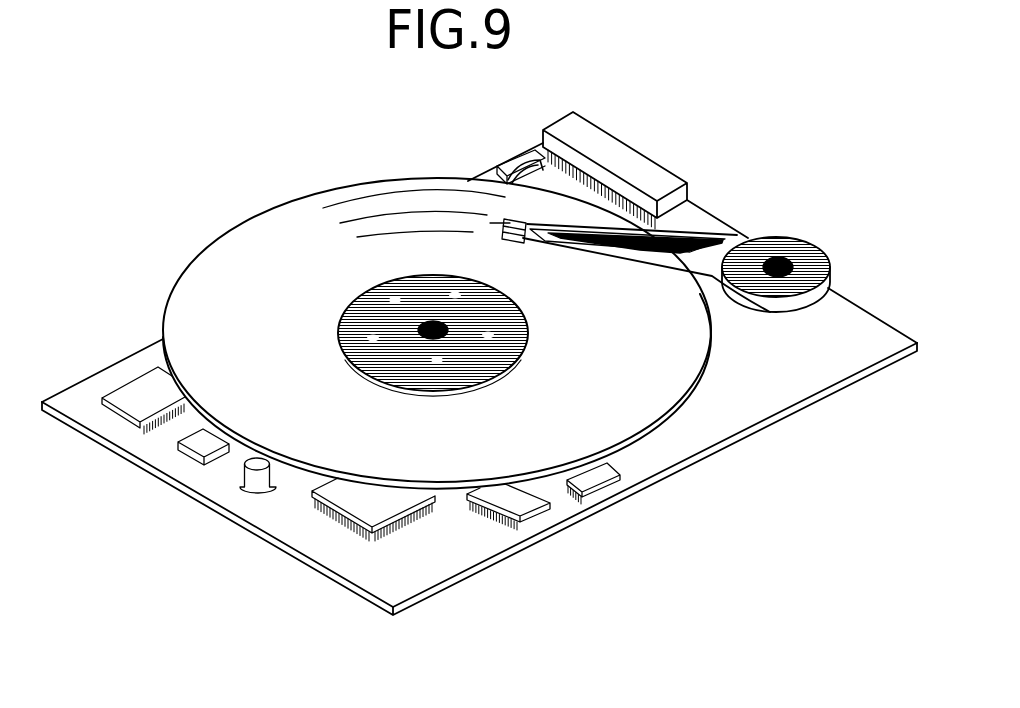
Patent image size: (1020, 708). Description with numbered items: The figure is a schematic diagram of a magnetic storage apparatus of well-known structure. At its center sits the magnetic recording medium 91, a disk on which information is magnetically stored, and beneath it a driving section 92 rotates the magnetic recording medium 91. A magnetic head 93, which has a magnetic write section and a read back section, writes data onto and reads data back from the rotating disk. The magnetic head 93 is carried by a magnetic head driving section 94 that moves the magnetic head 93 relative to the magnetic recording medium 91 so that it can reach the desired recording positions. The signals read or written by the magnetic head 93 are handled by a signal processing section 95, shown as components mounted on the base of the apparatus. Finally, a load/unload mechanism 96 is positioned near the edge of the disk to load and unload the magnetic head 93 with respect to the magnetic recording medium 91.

The magnetic recording medium (disk) 91 is at (203, 313).
The driving section 92 is at (355, 293).
The magnetic head 93 is at (520, 220).
The magnetic head driving section 94 is at (779, 240).
The signal processing section 95 is at (407, 497).
The load/unload mechanism 96 is at (500, 172).